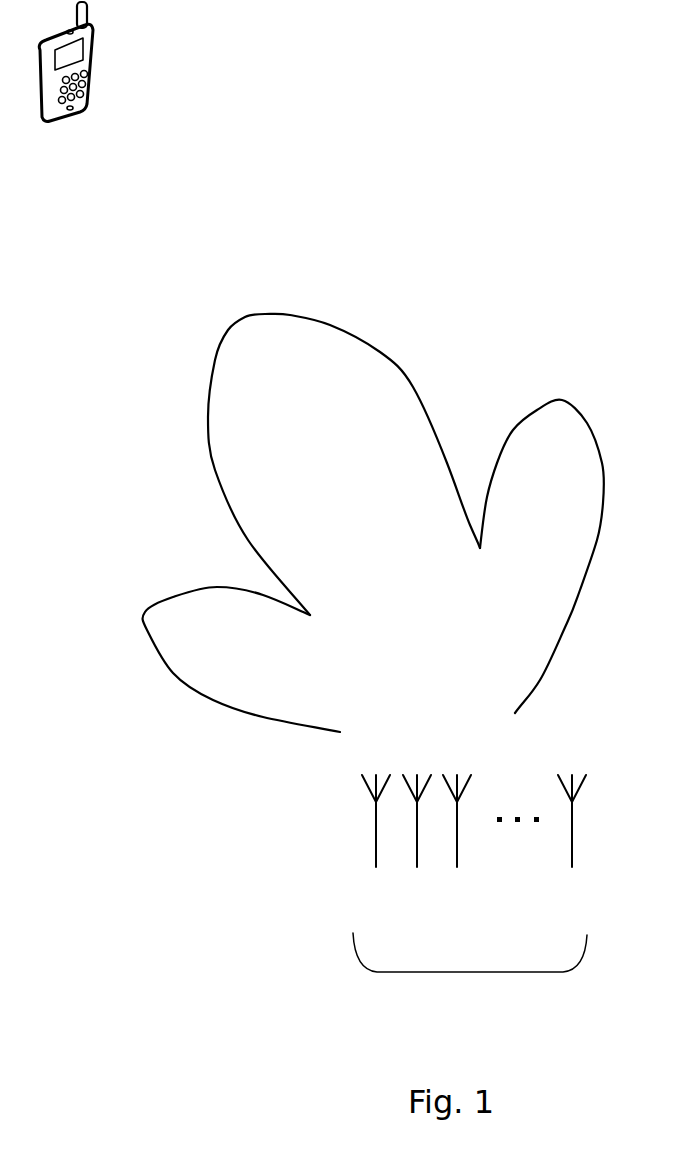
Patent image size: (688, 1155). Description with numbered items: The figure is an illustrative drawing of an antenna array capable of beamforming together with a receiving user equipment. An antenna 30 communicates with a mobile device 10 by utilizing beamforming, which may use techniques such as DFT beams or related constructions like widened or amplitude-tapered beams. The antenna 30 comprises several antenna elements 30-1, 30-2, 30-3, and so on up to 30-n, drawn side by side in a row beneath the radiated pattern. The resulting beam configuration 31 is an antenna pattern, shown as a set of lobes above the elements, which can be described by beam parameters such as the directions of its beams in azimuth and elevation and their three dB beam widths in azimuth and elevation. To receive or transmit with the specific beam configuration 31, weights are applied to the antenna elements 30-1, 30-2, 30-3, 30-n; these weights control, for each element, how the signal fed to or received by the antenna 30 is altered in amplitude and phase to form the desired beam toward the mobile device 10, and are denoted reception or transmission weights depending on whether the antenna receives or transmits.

The mobile device 10 is at (75, 70).
The beam configuration 31 is at (357, 481).
The antenna 30 is at (472, 906).
The antenna element 30-1 is at (373, 847).
The antenna element 30-2 is at (415, 848).
The antenna element 30-3 is at (458, 847).
The antenna element 30-n is at (573, 848).